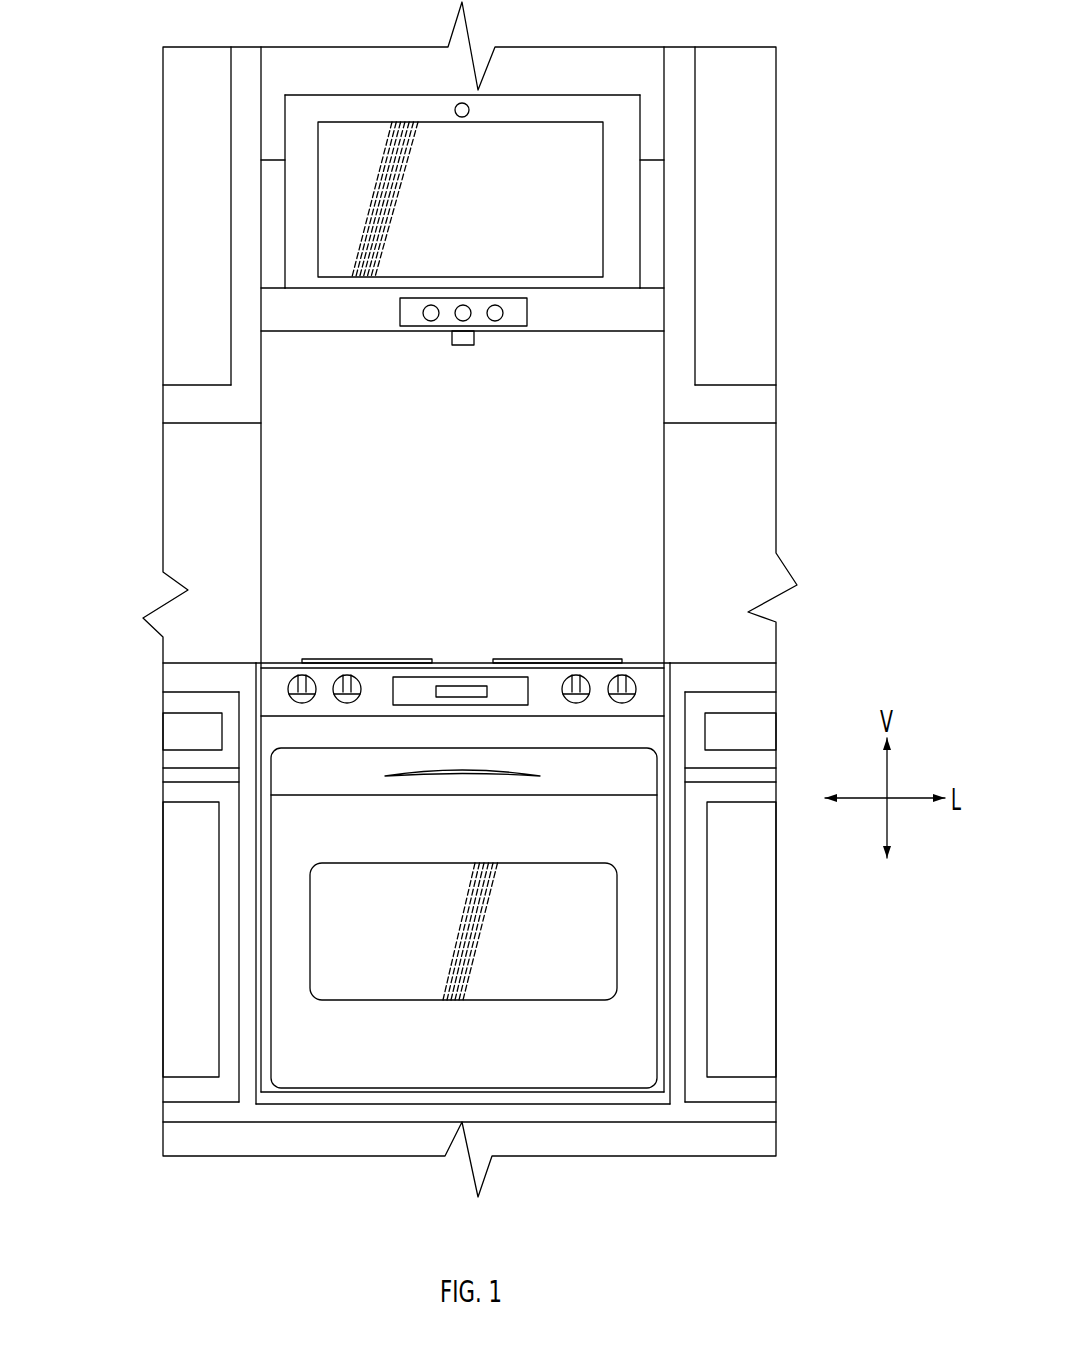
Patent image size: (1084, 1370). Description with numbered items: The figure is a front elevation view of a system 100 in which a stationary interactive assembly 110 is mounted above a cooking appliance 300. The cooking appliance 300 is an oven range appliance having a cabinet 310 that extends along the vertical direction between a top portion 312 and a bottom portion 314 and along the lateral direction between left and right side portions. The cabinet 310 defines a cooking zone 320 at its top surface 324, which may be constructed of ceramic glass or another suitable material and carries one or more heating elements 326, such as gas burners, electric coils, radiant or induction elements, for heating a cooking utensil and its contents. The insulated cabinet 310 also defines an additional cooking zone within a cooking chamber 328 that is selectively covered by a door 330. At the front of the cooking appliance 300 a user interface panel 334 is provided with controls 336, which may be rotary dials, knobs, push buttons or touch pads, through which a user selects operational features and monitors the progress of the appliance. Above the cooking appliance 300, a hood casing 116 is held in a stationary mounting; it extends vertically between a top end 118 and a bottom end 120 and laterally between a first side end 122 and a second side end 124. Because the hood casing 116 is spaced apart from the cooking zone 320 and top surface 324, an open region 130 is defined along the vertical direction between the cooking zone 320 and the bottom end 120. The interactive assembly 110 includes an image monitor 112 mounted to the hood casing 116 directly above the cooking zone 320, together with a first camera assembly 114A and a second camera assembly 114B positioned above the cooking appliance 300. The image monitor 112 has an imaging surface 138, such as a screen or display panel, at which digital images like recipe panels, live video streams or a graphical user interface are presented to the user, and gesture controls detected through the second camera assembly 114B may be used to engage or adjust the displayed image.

The system 100 is at (105, 110).
The interactive assembly 110 is at (515, 204).
The image monitor 112 is at (623, 120).
The first camera assembly 114A is at (462, 347).
The second camera assembly 114B is at (469, 108).
The hood casing 116 is at (640, 317).
The top end 118 is at (388, 92).
The bottom end 120 is at (565, 333).
The first side end 122 is at (664, 277).
The second side end 124 is at (257, 262).
The open region 130 is at (404, 496).
The imaging surface 138 is at (337, 210).
The cooking appliance 300 is at (458, 870).
The cabinet 310 is at (253, 1093).
The top portion 312 is at (250, 657).
The bottom portion 314 is at (311, 1104).
The cooking zone 320 is at (472, 637).
The top surface 324 is at (284, 656).
The heating elements 326 is at (368, 658).
The cooking chamber 328 is at (404, 934).
The door 330 is at (645, 925).
The user interface panel 334 is at (650, 675).
The controls 336 is at (637, 693).